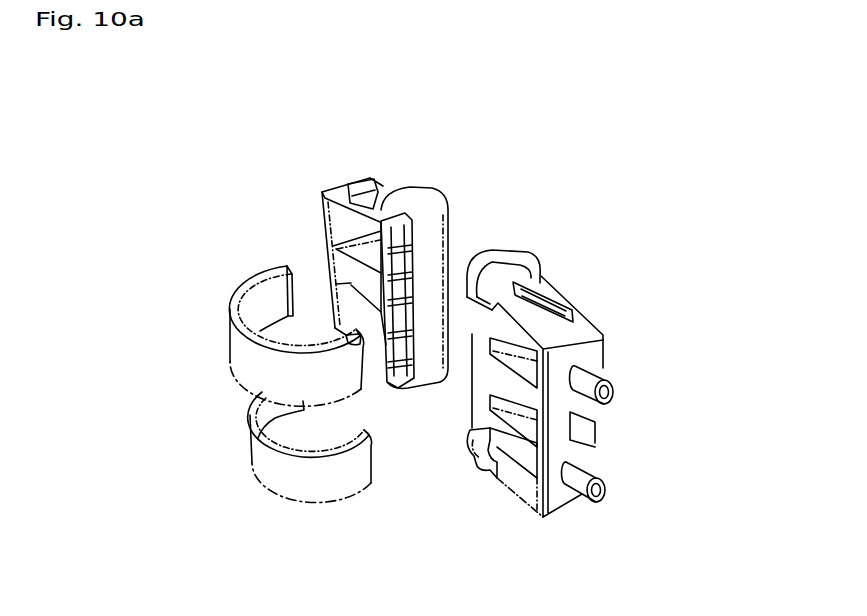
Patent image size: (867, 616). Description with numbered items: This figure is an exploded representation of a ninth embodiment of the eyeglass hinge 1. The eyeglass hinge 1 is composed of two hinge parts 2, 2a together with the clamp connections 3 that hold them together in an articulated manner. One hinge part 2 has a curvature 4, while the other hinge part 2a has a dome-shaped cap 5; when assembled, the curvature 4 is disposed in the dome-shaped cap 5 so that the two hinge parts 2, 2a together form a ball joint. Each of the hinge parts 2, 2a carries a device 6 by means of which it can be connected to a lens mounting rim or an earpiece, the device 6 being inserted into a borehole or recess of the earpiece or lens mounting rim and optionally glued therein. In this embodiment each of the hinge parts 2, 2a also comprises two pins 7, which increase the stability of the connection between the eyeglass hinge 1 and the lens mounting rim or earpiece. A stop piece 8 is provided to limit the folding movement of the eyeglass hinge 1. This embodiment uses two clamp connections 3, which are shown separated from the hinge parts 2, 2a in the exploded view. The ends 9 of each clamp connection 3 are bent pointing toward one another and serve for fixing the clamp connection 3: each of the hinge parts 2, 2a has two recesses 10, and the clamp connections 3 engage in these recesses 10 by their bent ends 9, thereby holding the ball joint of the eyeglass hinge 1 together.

The eyeglass hinge 1 is at (158, 89).
The hinge part 2 is at (580, 325).
The hinge part 2a is at (333, 188).
The clamp connection 3 is at (313, 463).
The curvature 4 is at (507, 252).
The dome-shaped cap 5 is at (427, 217).
The device 6 is at (358, 184).
The pin 7 is at (590, 483).
The stop piece 8 is at (392, 248).
The bent end 9 is at (372, 478).
The recess 10 is at (347, 300).